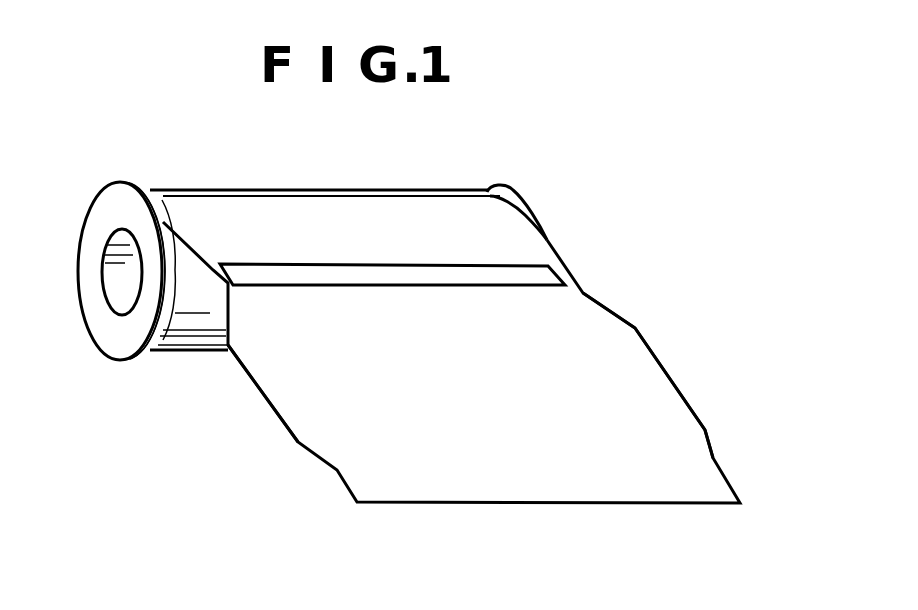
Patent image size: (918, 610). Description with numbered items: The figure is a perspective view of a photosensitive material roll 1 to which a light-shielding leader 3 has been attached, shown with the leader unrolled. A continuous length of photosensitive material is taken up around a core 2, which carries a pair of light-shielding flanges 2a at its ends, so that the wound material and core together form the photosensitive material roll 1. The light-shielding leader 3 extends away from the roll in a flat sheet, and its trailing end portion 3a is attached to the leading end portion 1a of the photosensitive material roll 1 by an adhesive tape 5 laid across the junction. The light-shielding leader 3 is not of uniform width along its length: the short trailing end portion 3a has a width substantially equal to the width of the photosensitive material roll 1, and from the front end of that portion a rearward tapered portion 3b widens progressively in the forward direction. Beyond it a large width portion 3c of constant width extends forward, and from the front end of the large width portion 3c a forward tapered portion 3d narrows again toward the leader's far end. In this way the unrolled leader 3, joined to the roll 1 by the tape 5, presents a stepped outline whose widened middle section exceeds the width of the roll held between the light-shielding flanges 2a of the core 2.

The photosensitive material roll 1 is at (240, 205).
The leading end portion 1a is at (487, 257).
The core 2 is at (95, 355).
The light-shielding flanges 2a is at (118, 190).
The light-shielding leader 3 is at (498, 408).
The trailing end portion 3a is at (358, 295).
The rearward tapered portion 3b is at (613, 312).
The large width portion 3c is at (697, 408).
The forward tapered portion 3d is at (713, 455).
The adhesive tape 5 is at (530, 277).